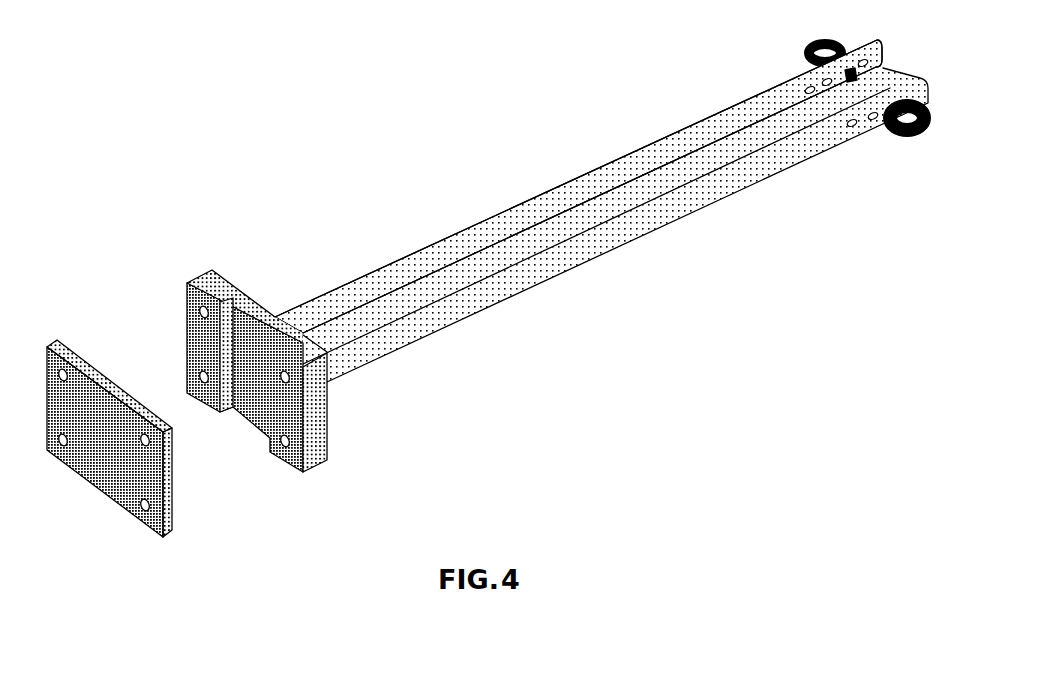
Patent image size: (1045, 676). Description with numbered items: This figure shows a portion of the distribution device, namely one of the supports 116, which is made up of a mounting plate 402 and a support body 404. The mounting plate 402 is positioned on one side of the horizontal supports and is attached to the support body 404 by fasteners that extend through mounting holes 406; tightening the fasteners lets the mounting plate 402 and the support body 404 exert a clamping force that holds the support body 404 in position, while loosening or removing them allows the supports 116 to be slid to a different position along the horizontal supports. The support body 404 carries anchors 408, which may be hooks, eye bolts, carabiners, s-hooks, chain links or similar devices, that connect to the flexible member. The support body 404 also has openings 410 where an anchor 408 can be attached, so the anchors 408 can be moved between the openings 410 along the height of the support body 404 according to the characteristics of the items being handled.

The support 116 is at (243, 147).
The mounting plate 402 is at (168, 513).
The support body 404 is at (535, 270).
The mounting holes 406 is at (203, 312).
The anchor 408 is at (803, 60).
The openings 410 is at (798, 95).